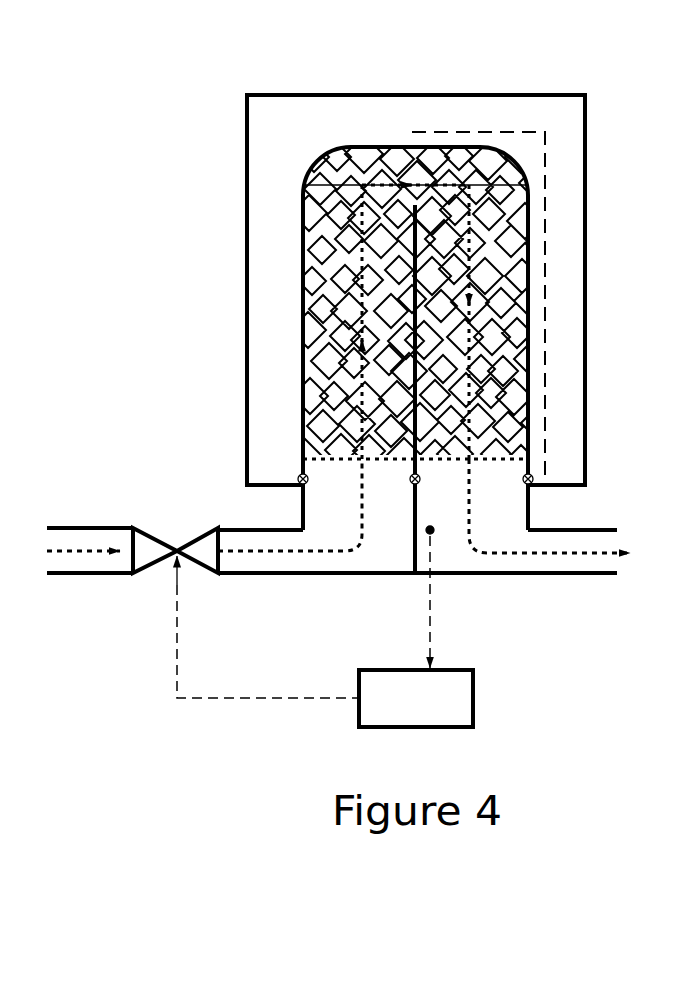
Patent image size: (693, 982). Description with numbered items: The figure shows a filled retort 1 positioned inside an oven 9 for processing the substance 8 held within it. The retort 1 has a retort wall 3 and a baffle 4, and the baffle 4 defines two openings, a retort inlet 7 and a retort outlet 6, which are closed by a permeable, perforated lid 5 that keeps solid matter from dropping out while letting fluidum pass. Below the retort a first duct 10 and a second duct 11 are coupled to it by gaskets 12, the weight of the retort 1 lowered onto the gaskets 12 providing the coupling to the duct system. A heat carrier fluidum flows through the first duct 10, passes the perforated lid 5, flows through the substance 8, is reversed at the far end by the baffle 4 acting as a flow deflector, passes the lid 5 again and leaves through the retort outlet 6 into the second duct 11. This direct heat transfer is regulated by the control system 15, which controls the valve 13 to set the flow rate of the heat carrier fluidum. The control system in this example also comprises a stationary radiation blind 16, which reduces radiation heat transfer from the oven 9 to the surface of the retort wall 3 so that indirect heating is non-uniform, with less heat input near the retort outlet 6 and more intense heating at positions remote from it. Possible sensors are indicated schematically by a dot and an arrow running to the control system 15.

The retort 1 is at (351, 274).
The retort wall 3 is at (530, 332).
The baffle 4 is at (410, 305).
The permeable lid 5 is at (490, 460).
The retort outlet 6 is at (485, 473).
The retort inlet 7 is at (340, 478).
The substance 8 is at (503, 238).
The oven 9 is at (247, 190).
The first duct 10 is at (320, 556).
The second duct 11 is at (472, 548).
The gaskets 12 is at (300, 477).
The valve 13 is at (177, 546).
The control system 15 is at (440, 700).
The stationary radiation blind 16 is at (547, 150).